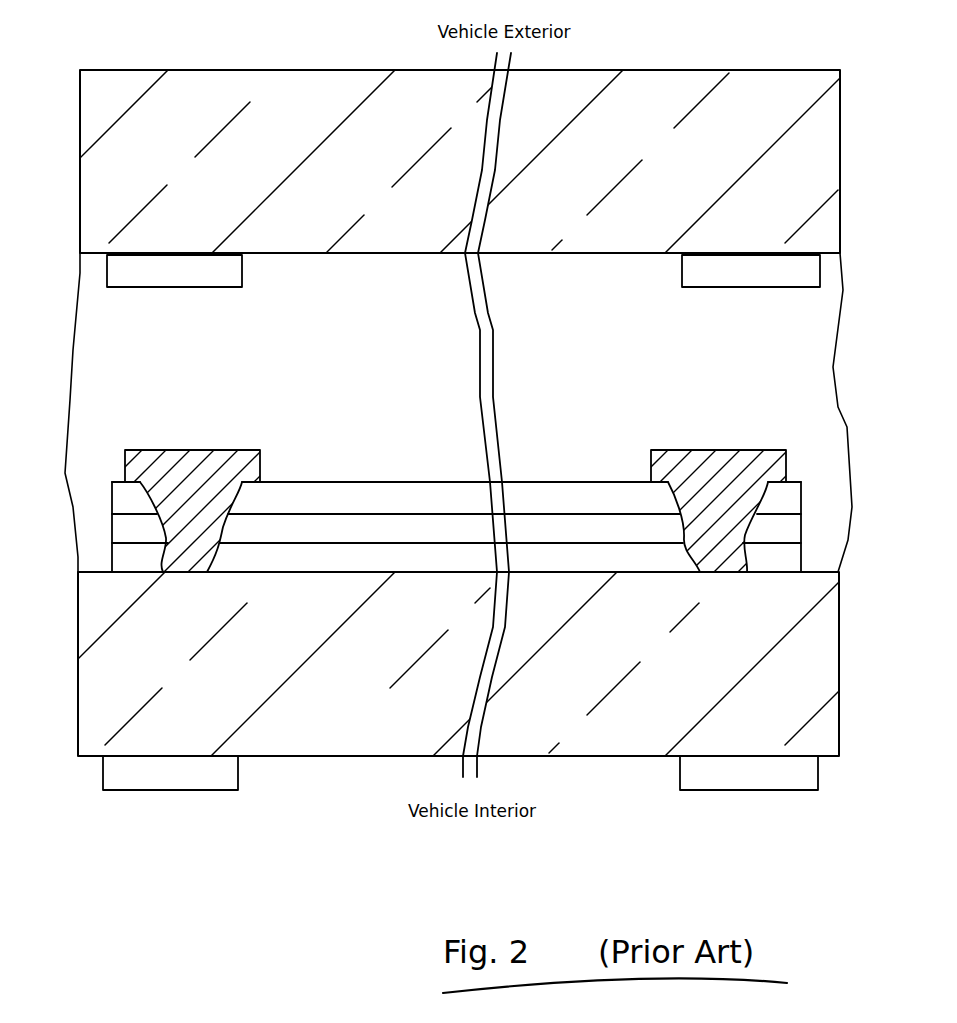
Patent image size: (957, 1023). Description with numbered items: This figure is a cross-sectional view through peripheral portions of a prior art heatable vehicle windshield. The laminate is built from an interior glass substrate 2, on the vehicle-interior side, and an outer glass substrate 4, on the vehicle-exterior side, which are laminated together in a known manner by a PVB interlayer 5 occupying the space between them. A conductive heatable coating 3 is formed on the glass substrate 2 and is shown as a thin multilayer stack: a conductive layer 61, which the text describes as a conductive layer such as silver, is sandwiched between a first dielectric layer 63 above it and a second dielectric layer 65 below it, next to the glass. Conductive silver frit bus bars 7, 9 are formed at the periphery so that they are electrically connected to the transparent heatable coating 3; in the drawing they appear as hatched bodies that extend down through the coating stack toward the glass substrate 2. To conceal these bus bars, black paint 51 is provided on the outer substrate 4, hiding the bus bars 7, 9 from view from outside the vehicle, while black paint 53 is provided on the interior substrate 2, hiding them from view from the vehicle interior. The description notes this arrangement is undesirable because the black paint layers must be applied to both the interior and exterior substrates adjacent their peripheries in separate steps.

The glass substrate 2 is at (620, 732).
The conductive heatable coating 3 is at (814, 482).
The glass substrate 4 is at (667, 87).
The PVB interlayer 5 is at (803, 367).
The bus bar 7 is at (203, 472).
The bus bar 9 is at (668, 447).
The black paint 51 is at (217, 288).
The black paint 53 is at (213, 792).
The conductive layer 61 is at (458, 532).
The first dielectric layer 63 is at (413, 490).
The second dielectric layer 65 is at (430, 556).